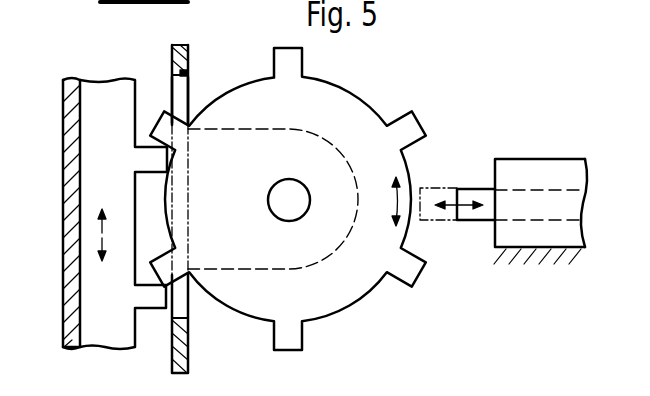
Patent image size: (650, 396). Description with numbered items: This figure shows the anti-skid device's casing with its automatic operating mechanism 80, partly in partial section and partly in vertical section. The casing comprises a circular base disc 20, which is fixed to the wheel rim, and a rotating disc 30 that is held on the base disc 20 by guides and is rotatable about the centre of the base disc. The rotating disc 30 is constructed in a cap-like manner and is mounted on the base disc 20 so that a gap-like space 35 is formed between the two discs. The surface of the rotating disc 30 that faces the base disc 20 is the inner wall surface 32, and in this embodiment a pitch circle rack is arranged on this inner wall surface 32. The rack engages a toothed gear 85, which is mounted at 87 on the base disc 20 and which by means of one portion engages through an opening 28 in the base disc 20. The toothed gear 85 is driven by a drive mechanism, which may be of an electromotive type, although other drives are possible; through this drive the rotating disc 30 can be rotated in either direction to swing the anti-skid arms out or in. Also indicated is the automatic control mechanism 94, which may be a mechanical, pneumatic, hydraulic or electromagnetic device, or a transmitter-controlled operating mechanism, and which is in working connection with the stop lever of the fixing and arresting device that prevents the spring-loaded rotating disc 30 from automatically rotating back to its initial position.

The base disc 20 is at (183, 58).
The opening 28 is at (182, 102).
The rotating disc 30 is at (63, 151).
The inner wall surface 32 is at (84, 193).
The gap-like space 35 is at (158, 86).
The automatic operating mechanism 80 is at (190, 351).
The toothed gear 85 is at (313, 93).
The mounting of gear 87 is at (292, 194).
The automatic control mechanism 94 is at (539, 170).